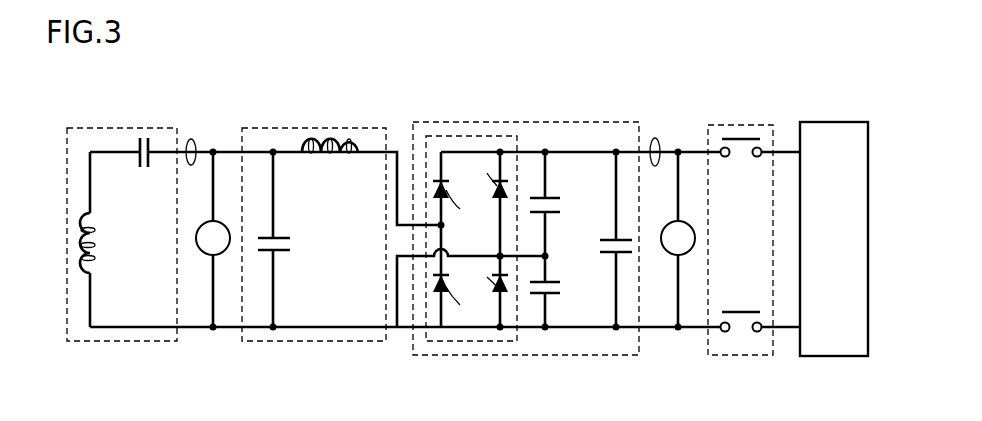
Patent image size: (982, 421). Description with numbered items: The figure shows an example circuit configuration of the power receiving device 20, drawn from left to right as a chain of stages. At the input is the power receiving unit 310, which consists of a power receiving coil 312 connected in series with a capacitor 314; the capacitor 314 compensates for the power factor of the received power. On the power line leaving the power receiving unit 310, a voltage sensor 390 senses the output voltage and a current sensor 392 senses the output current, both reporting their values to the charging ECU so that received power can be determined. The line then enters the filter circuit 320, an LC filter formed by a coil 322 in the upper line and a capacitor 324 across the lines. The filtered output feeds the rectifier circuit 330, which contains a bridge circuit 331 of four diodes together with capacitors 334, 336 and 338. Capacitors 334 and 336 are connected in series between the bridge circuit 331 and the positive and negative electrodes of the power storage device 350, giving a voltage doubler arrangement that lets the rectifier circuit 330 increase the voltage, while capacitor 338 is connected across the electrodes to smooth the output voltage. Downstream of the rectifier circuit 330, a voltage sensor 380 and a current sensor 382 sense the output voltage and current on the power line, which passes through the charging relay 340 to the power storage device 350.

The power receiving device 20 is at (439, 60).
The power receiving unit 310 is at (97, 127).
The power receiving coil 312 is at (95, 260).
The capacitor 314 is at (140, 138).
The filter circuit 320 is at (270, 127).
The coil 322 is at (339, 140).
The capacitor 324 is at (283, 253).
The rectifier circuit 330 is at (556, 122).
The bridge circuit 331 is at (468, 136).
The capacitor 334 is at (553, 197).
The capacitor 336 is at (554, 283).
The capacitor 338 is at (612, 240).
The charging relay 340 is at (742, 126).
The power storage device 350 is at (822, 124).
The voltage sensor 380 is at (670, 255).
The current sensor 382 is at (660, 150).
The voltage sensor 390 is at (207, 254).
The current sensor 392 is at (195, 143).